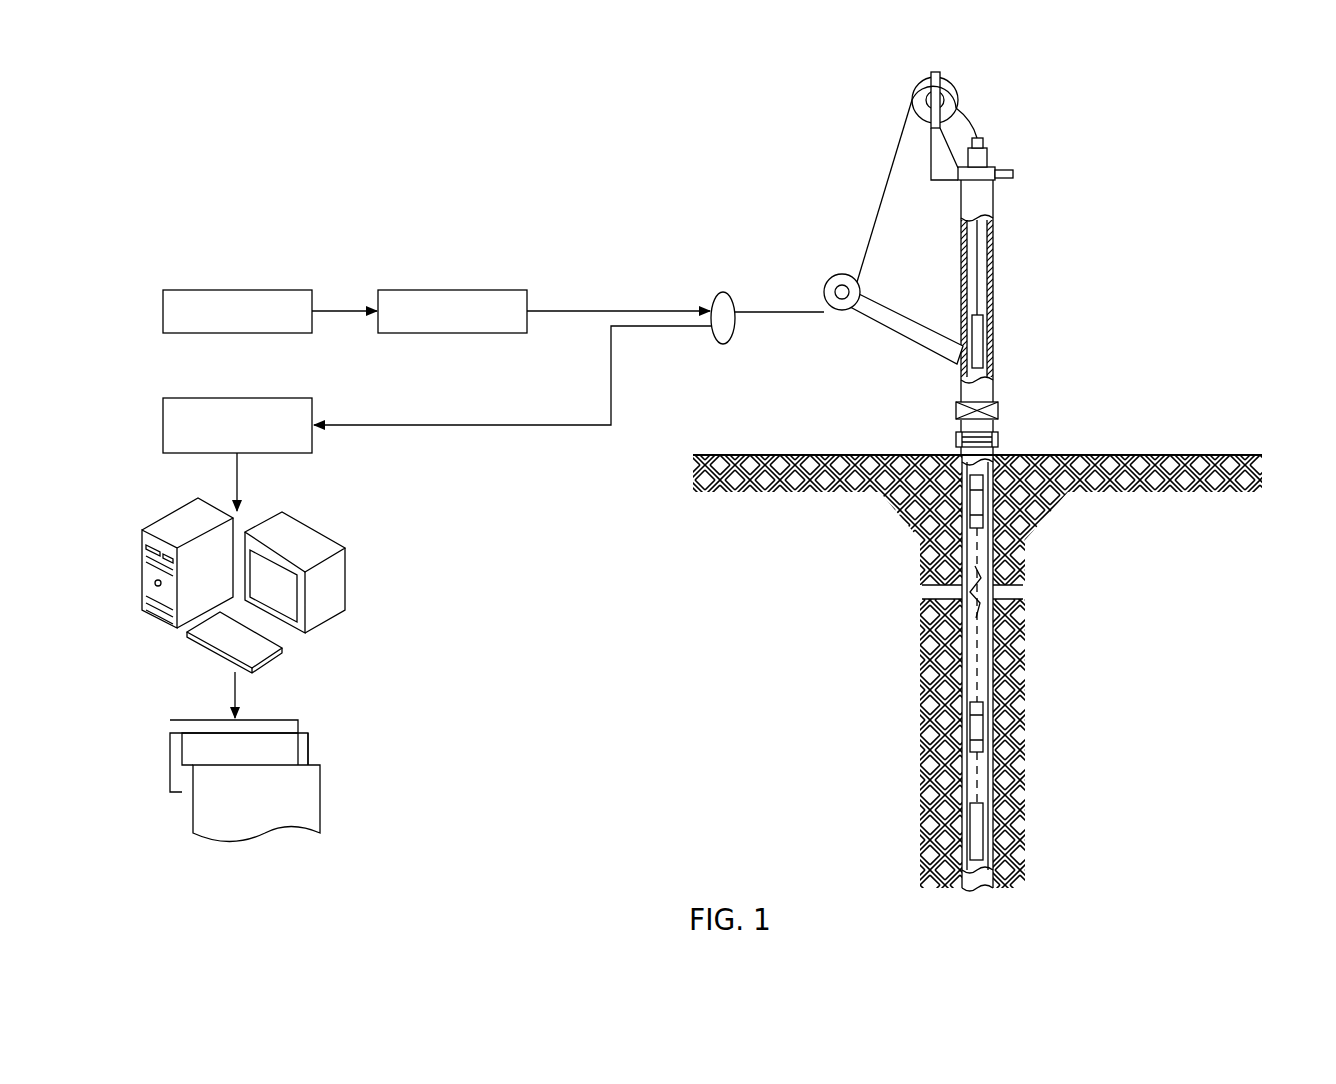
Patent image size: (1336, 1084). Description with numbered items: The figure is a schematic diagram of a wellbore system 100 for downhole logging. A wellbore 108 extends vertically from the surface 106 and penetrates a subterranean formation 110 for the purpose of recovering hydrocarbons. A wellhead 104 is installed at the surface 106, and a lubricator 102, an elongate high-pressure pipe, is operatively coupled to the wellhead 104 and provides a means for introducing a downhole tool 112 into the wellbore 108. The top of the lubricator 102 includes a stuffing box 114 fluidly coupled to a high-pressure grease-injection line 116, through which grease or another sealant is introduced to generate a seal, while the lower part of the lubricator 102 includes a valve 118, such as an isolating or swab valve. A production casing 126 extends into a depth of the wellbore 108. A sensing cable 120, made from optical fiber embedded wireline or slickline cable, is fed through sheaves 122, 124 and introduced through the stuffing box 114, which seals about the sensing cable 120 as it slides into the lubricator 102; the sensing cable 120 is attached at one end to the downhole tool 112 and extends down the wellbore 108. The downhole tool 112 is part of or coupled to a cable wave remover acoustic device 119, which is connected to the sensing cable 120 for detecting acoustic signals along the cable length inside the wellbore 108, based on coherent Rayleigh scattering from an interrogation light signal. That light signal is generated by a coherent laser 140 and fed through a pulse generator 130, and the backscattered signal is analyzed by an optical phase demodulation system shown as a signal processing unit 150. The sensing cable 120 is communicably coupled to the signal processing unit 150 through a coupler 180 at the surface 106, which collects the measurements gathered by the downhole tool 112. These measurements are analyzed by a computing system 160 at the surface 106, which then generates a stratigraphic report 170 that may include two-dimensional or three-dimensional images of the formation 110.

The wellbore system 100 is at (1094, 168).
The lubricator 102 is at (963, 264).
The wellhead 104 is at (995, 452).
The surface 106 is at (1115, 455).
The wellbore 108 is at (968, 537).
The subterranean formation 110 is at (772, 568).
The downhole tool 112 is at (983, 340).
The stuffing box 114 is at (987, 158).
The high-pressure grease-injection line 116 is at (1008, 178).
The valve 118 is at (1004, 411).
The acoustic device 119 is at (990, 503).
The sensing cable 120 is at (974, 112).
The sheave 122 is at (840, 274).
The sheave 124 is at (914, 104).
The production casing 126 is at (962, 697).
The pulse generator 130 is at (492, 290).
The coherent laser 140 is at (278, 290).
The signal processing unit 150 is at (300, 398).
The computing system 160 is at (345, 540).
The stratigraphic report 170 is at (320, 775).
The coupler 180 is at (716, 292).